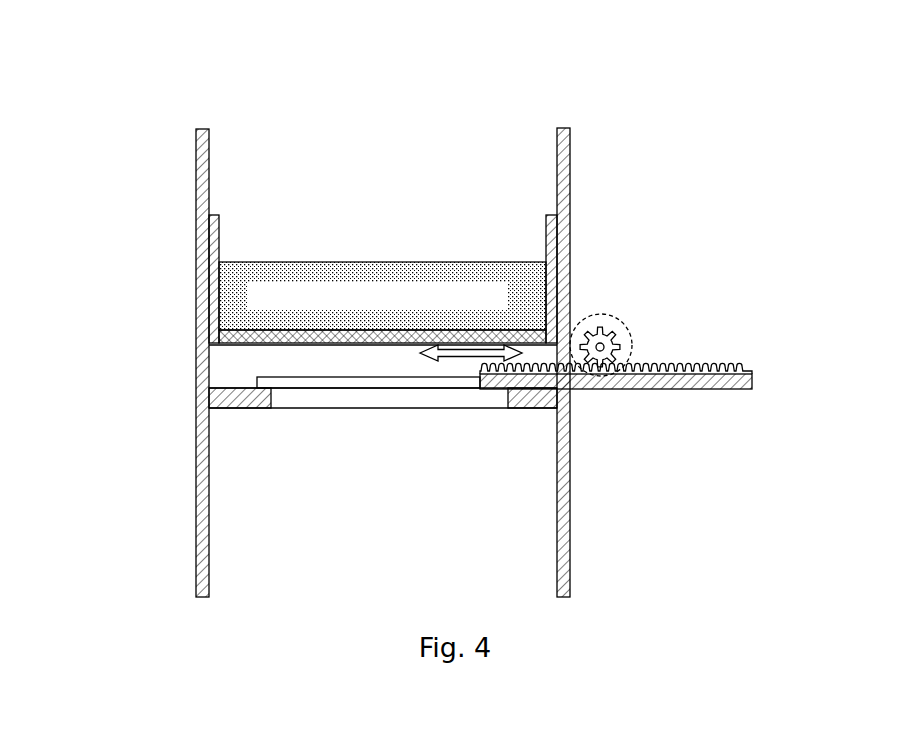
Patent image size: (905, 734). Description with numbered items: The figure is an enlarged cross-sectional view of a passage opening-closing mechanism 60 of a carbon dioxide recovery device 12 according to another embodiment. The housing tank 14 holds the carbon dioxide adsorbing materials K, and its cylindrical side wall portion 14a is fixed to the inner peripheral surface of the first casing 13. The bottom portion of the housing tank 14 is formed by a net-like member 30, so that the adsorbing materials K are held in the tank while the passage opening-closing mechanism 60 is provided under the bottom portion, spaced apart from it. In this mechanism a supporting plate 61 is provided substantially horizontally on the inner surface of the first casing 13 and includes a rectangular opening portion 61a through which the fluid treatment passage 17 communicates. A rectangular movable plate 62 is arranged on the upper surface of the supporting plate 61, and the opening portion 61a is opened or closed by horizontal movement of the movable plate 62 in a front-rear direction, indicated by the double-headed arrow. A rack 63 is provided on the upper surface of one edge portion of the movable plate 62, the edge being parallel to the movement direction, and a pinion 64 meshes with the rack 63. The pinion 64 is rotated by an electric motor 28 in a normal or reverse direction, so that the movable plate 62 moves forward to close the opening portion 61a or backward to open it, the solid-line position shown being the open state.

The adsorption device 12 is at (283, 83).
The first casing 13 is at (571, 164).
The housing tank 14 is at (225, 219).
The side wall portion 14a is at (218, 252).
The fluid treatment passage 17 is at (490, 508).
The electric motor 28 is at (592, 298).
The net-like member 30 is at (197, 338).
The passage opening-closing mechanism 60 is at (637, 361).
The supporting plate 61 is at (333, 412).
The opening portion 61a is at (297, 405).
The movable plate 62 is at (712, 390).
The rack 63 is at (692, 363).
The pinion 64 is at (606, 342).